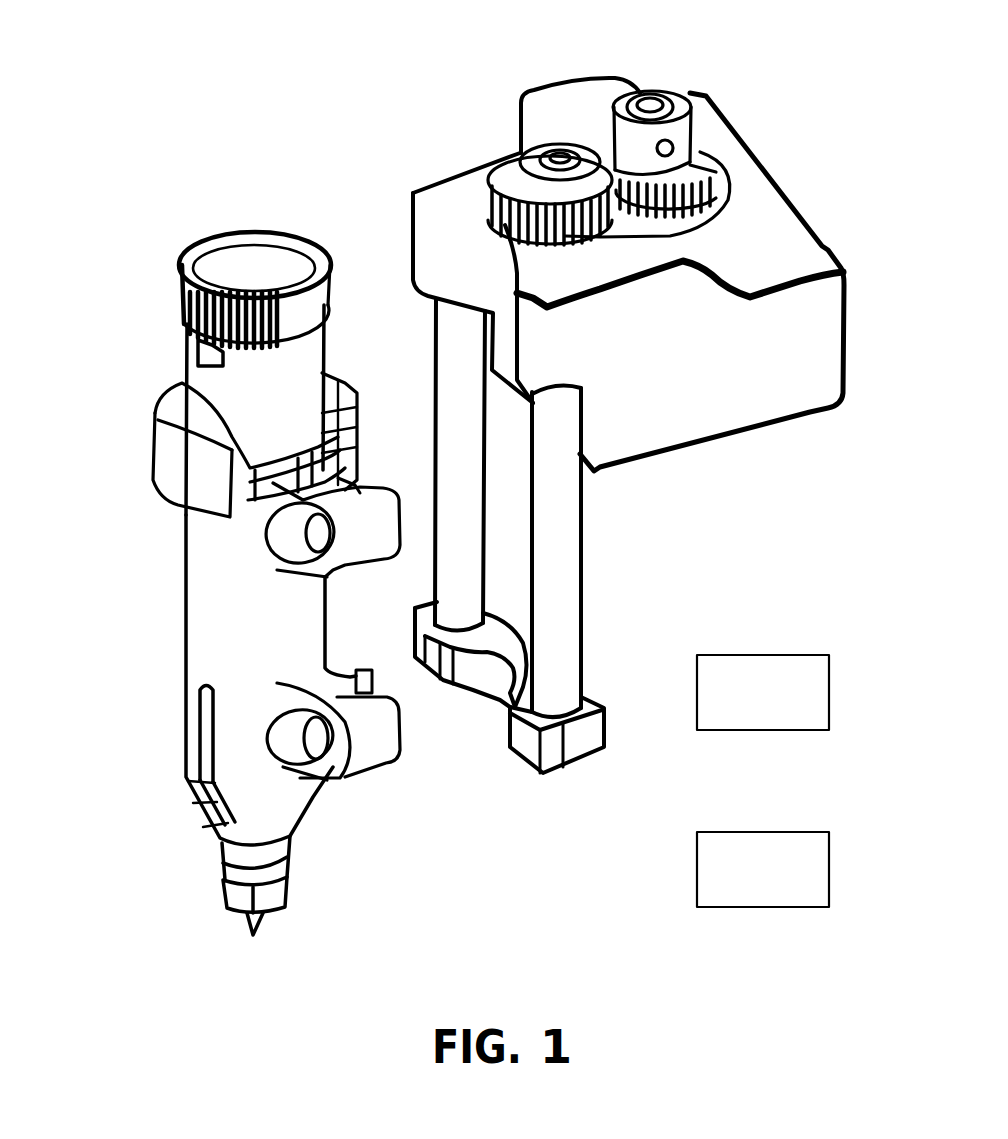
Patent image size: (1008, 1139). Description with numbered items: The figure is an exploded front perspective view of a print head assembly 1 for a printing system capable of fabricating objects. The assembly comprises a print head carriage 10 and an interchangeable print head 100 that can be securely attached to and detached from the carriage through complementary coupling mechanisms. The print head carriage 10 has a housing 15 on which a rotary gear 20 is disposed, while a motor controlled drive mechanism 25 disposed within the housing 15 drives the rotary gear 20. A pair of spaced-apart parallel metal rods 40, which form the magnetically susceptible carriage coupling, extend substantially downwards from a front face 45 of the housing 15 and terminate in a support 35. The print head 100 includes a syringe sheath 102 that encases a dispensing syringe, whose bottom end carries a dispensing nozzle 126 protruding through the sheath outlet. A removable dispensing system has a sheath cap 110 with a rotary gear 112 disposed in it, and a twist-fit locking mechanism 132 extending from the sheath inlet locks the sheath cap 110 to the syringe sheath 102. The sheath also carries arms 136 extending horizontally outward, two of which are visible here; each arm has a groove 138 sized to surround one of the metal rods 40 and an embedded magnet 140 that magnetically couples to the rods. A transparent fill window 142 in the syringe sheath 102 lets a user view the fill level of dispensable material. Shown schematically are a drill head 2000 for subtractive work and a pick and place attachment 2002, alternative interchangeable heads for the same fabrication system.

The print head assembly 1 is at (195, 95).
The print head carriage 10 is at (493, 90).
The housing 15 is at (717, 413).
The rotary gear 20 is at (507, 167).
The motor controlled drive mechanism 25 is at (668, 90).
The support 35 is at (573, 733).
The metal rods 40 is at (478, 542).
The front face 45 is at (433, 250).
The print head 100 is at (177, 222).
The syringe sheath 102 is at (183, 560).
The sheath cap 110 is at (212, 385).
The rotary gear 112 is at (248, 262).
The dispensing nozzle 126 is at (255, 920).
The locking mechanism 132 is at (188, 470).
The arms 136 is at (357, 543).
The groove 138 is at (373, 473).
The magnet 140 is at (300, 530).
The transparent fill window 142 is at (197, 737).
The drill head 2000 is at (743, 653).
The pick and place attachment 2002 is at (753, 833).